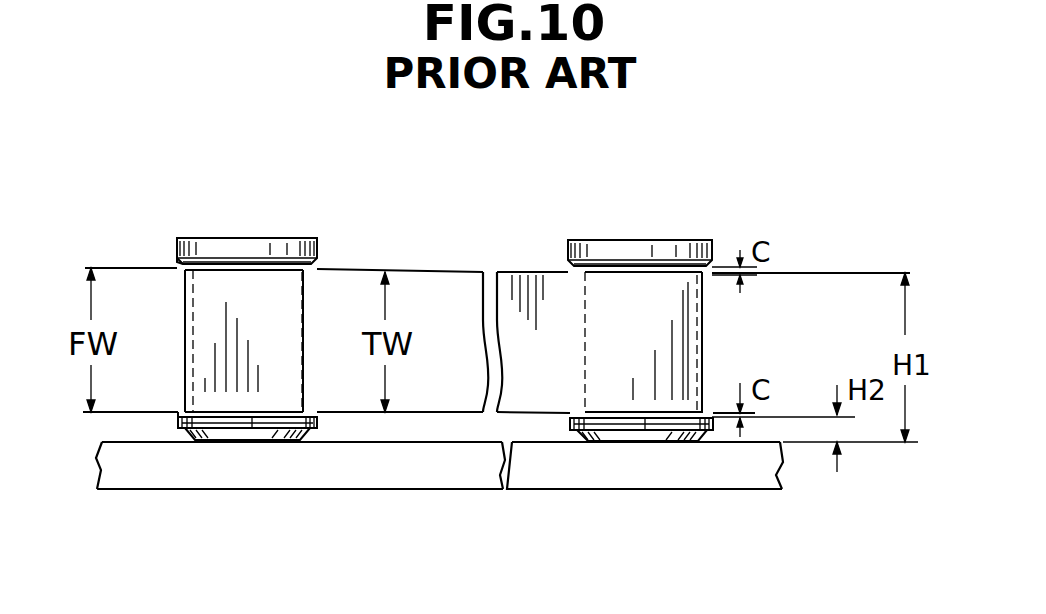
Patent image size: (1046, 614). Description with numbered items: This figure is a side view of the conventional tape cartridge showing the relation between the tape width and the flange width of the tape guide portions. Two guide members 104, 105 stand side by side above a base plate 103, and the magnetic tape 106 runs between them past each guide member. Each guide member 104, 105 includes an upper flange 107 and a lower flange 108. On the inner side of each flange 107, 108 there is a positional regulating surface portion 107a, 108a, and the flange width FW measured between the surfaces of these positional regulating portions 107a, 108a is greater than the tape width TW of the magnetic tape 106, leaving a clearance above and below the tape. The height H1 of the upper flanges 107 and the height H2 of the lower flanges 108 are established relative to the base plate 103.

The base plate 103 is at (748, 472).
The guide member 104 is at (231, 212).
The guide member 105 is at (617, 222).
The magnetic tape 106 is at (447, 288).
The upper flange 107 is at (298, 247).
The positional regulating surface portion 107a is at (177, 262).
The lower flange 108 is at (248, 432).
The positional regulating surface portion 108a is at (178, 413).